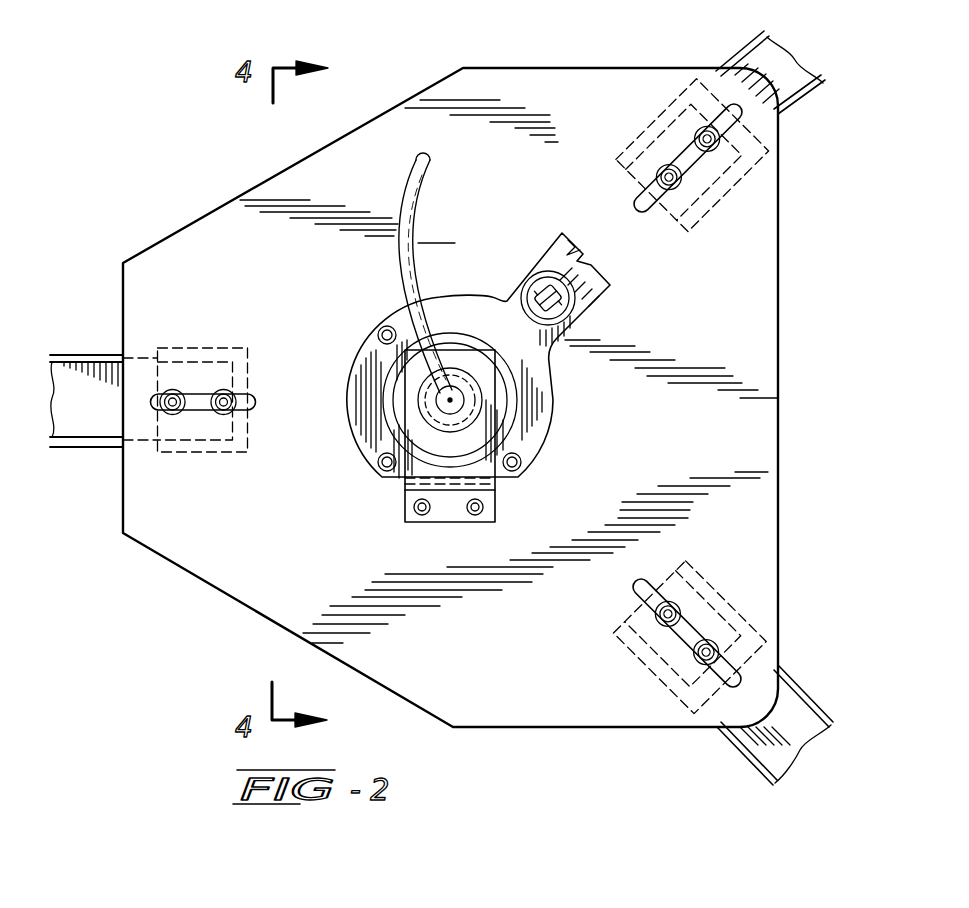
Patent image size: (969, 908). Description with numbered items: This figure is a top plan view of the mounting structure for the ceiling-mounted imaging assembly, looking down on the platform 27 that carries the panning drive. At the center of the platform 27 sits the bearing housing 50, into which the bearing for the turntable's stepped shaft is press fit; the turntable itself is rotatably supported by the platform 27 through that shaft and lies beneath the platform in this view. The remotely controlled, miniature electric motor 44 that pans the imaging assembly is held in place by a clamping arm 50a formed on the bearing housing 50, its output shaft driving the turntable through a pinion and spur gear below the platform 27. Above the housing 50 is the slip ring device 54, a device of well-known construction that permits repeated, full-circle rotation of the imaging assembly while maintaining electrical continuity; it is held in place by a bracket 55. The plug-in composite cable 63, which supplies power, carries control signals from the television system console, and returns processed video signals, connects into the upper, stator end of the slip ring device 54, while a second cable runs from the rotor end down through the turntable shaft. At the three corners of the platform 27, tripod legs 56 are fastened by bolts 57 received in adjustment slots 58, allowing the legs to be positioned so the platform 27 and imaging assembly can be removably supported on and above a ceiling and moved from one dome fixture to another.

The platform 27 is at (778, 348).
The electric motor 44 is at (543, 290).
The housing 50 is at (547, 434).
The clamping arm 50a is at (583, 297).
The slip ring device 54 is at (477, 400).
The bracket 55 is at (477, 457).
The tripod legs 56 is at (83, 353).
The bolts 57 is at (225, 390).
The adjustment slots 58 is at (197, 408).
The composite cable 63 is at (412, 183).